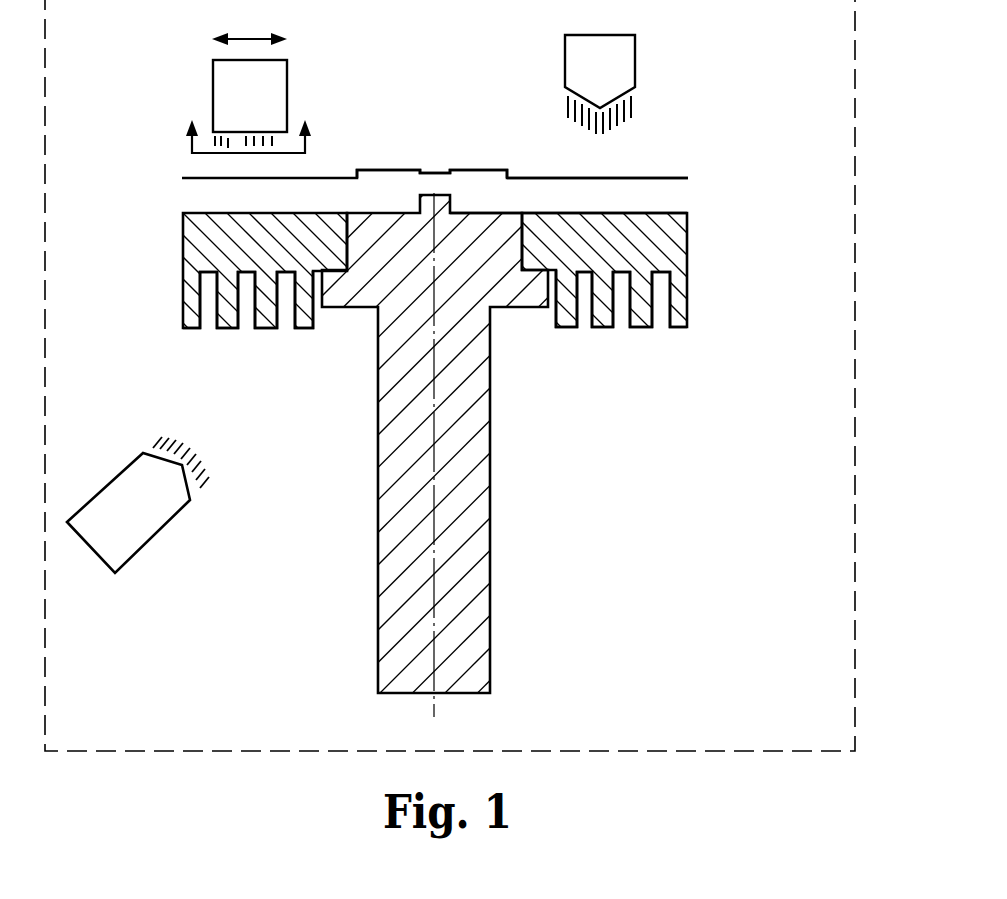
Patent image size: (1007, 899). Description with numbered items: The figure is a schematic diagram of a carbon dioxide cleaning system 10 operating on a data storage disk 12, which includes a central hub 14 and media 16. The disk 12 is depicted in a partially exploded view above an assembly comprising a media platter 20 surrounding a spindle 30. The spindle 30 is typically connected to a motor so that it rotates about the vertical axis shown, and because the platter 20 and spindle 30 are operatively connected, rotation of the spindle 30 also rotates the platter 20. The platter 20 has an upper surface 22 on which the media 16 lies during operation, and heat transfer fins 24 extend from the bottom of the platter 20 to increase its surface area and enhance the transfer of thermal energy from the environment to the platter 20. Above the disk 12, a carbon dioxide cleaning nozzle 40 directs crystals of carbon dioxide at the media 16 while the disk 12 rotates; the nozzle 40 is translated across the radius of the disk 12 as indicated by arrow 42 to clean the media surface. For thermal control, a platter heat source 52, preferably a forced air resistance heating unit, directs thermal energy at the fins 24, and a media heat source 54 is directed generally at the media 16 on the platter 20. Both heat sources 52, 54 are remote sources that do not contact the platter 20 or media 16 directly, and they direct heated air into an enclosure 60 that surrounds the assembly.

The system 10 is at (871, 61).
The data storage disk 12 is at (442, 149).
The central hub 14 is at (487, 169).
The media 16 is at (568, 177).
The media platter 20 is at (433, 275).
The upper surface 22 is at (647, 212).
The heat transfer fins 24 is at (283, 329).
The spindle 30 is at (517, 308).
The carbon dioxide cleaning nozzle 40 is at (280, 78).
The arrow 42 is at (243, 37).
The platter heat source 52 is at (143, 549).
The media heat source 54 is at (612, 58).
The enclosure 60 is at (855, 396).